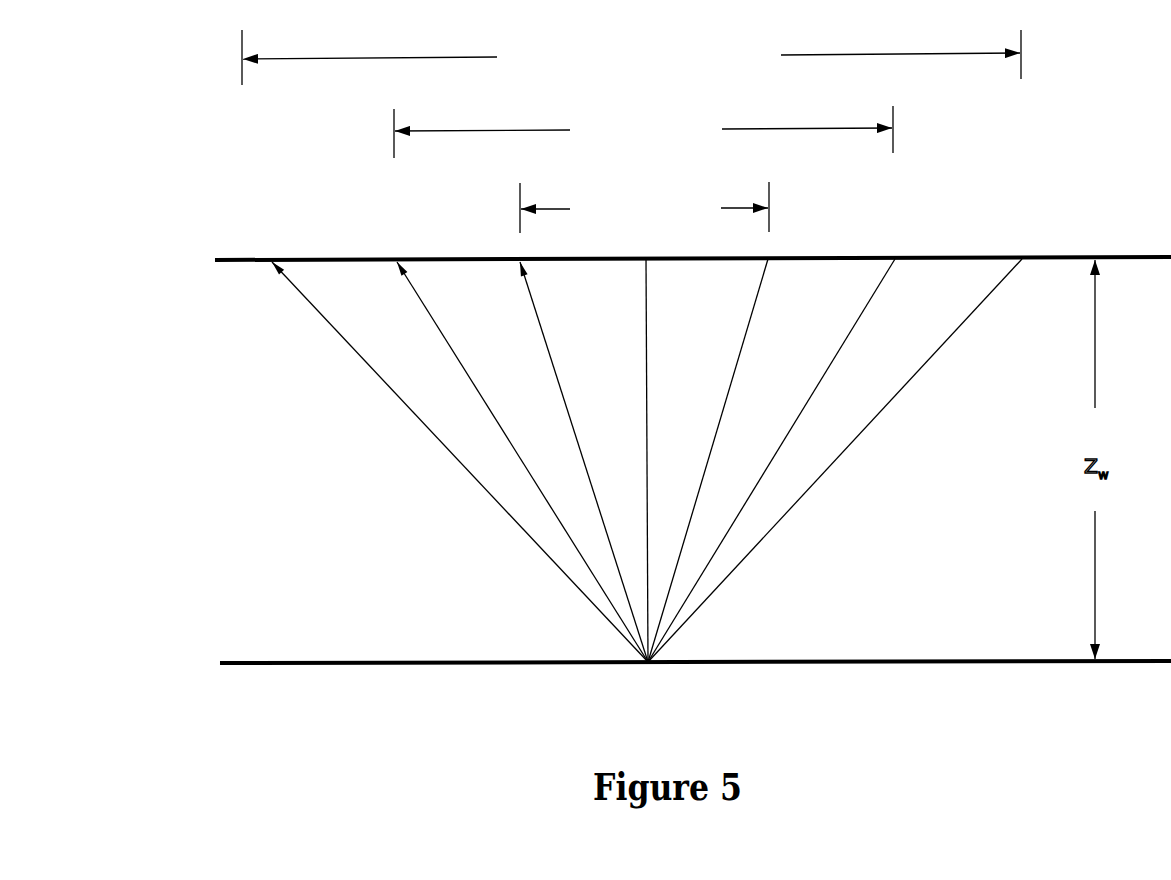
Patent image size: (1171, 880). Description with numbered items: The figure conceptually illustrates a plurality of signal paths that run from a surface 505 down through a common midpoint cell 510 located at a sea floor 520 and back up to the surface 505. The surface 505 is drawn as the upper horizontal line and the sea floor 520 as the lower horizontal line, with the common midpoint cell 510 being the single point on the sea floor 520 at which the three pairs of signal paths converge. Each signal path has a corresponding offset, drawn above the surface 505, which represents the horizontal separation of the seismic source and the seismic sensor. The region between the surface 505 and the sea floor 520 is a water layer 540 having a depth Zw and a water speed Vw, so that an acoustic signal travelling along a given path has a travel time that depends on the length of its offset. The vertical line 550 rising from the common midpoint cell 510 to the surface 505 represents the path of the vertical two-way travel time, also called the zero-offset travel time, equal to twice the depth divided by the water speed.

The surface 505 is at (345, 258).
The sea floor 520 is at (425, 661).
The common midpoint cell 510 is at (652, 681).
The line 550 is at (647, 360).
The water layer 540 is at (219, 405).